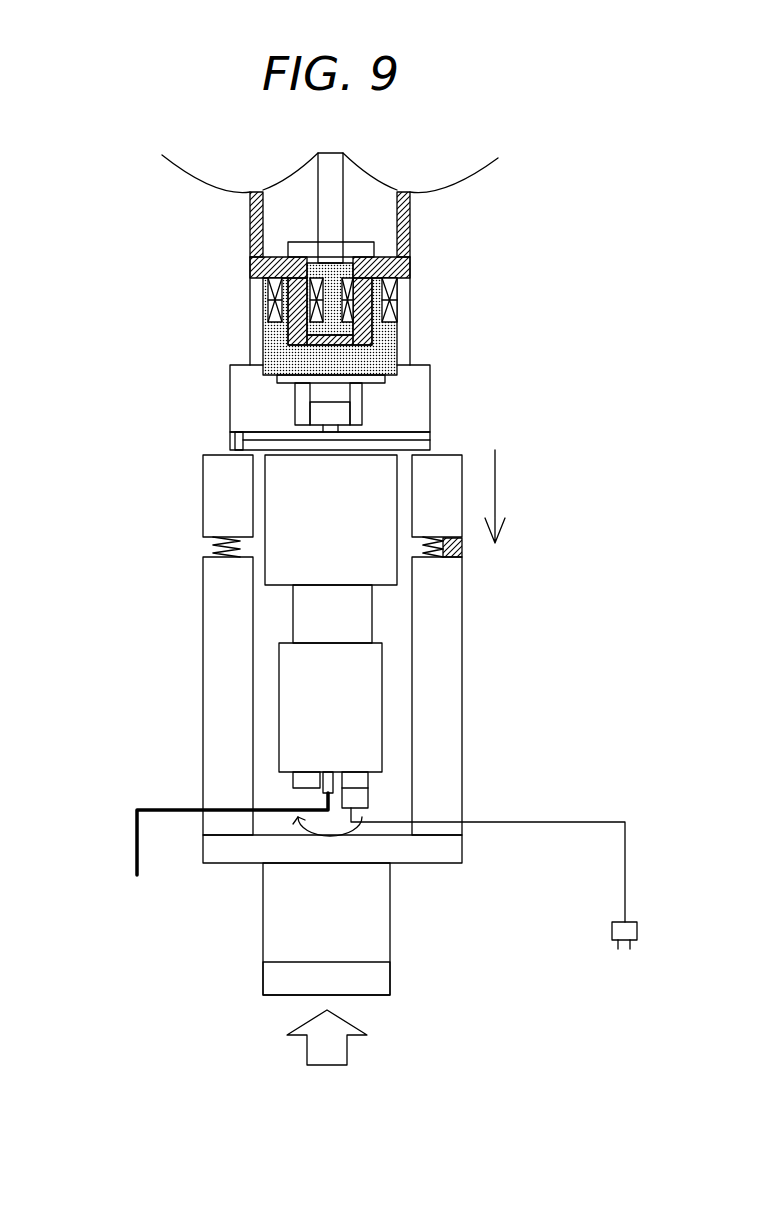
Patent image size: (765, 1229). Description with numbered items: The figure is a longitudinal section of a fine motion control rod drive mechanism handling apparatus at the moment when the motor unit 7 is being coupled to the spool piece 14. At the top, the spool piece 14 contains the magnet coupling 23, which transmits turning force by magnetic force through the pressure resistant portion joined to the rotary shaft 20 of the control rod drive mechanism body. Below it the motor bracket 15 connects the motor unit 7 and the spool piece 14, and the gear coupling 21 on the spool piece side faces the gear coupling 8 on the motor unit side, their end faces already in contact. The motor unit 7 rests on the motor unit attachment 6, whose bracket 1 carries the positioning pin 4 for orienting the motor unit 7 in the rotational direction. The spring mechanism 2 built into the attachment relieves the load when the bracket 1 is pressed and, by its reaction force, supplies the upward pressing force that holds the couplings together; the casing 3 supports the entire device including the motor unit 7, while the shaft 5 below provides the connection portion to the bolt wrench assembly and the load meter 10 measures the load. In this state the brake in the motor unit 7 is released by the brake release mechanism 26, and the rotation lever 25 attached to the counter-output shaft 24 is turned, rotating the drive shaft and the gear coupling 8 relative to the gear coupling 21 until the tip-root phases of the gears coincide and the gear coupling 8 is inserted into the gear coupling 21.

The bracket 1 is at (203, 490).
The spring mechanism 2 is at (213, 545).
The casing 3 is at (203, 612).
The positioning pin 4 is at (232, 439).
The shaft 5 is at (263, 921).
The motor unit attachment 6 is at (462, 683).
The motor unit 7 is at (397, 565).
The gear coupling on the motor unit side 8 is at (335, 416).
The load meter 10 is at (385, 978).
The spool piece 14 is at (250, 251).
The motor bracket 15 is at (230, 392).
The rotary shaft 20 is at (345, 227).
The gear coupling on the spool piece side 21 is at (362, 397).
The magnet coupling 23 is at (398, 322).
The counter-output shaft 24 is at (320, 780).
The rotation lever 25 is at (137, 838).
The brake release mechanism 26 is at (557, 822).